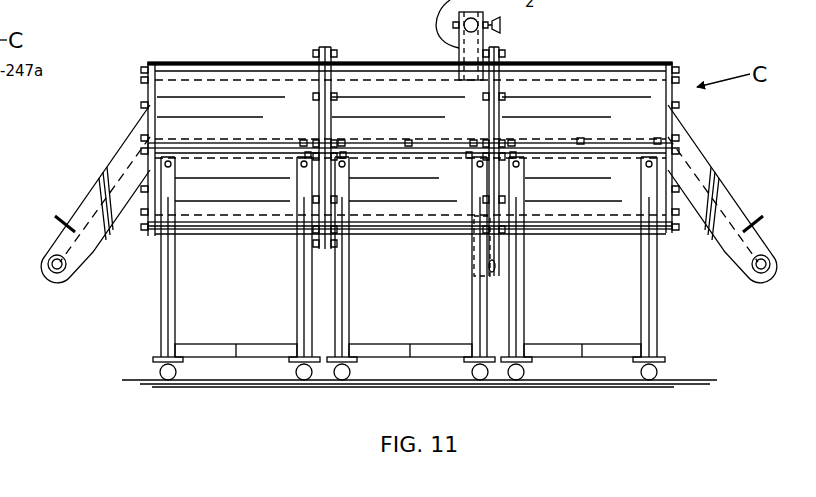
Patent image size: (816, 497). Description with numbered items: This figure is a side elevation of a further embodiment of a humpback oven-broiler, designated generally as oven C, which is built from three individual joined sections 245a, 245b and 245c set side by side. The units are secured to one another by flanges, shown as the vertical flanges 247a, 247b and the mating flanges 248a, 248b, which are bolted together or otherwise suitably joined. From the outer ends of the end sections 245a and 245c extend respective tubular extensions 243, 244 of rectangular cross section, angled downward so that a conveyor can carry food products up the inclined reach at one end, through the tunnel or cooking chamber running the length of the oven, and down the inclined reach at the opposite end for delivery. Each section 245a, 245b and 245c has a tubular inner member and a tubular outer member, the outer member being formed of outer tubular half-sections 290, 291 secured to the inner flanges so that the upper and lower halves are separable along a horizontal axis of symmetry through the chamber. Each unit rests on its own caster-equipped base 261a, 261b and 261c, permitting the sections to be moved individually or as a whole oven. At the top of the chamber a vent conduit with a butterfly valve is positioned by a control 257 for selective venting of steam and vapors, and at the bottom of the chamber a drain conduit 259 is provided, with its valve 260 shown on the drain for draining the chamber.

The tubular extension 243 is at (113, 153).
The tubular extension 244 is at (712, 163).
The oven section 245a is at (232, 52).
The oven section 245b is at (420, 53).
The oven section 245c is at (564, 52).
The flange 247a is at (317, 72).
The flange 247b is at (333, 88).
The flange 248a is at (489, 112).
The flange 248b is at (499, 112).
The control 257 is at (502, 25).
The drain conduit 259 is at (472, 256).
The latch knob 260 is at (496, 266).
The caster-equipped base 261a is at (245, 365).
The caster-equipped base 261b is at (420, 364).
The caster-equipped base 261c is at (604, 363).
The outer tubular half-section 290 is at (601, 208).
The outer tubular half-section 291 is at (631, 90).